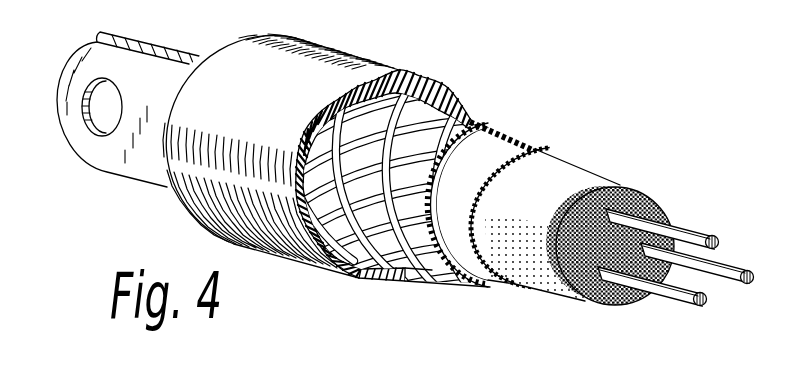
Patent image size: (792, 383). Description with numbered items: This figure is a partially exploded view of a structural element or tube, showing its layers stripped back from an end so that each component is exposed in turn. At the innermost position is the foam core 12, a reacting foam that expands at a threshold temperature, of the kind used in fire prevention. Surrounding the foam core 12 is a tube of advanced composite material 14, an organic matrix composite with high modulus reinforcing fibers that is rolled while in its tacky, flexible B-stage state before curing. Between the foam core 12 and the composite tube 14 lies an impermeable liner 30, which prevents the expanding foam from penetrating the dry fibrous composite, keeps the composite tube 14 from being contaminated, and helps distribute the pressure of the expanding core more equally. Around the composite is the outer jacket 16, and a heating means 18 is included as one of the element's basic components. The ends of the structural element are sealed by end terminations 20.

The foam core 12 is at (597, 175).
The tube of advanced composite material 14 is at (441, 97).
The outer jacket 16 is at (338, 52).
The heating means 18 is at (707, 293).
The end terminations 20 is at (107, 173).
The impermeable liner 30 is at (498, 152).